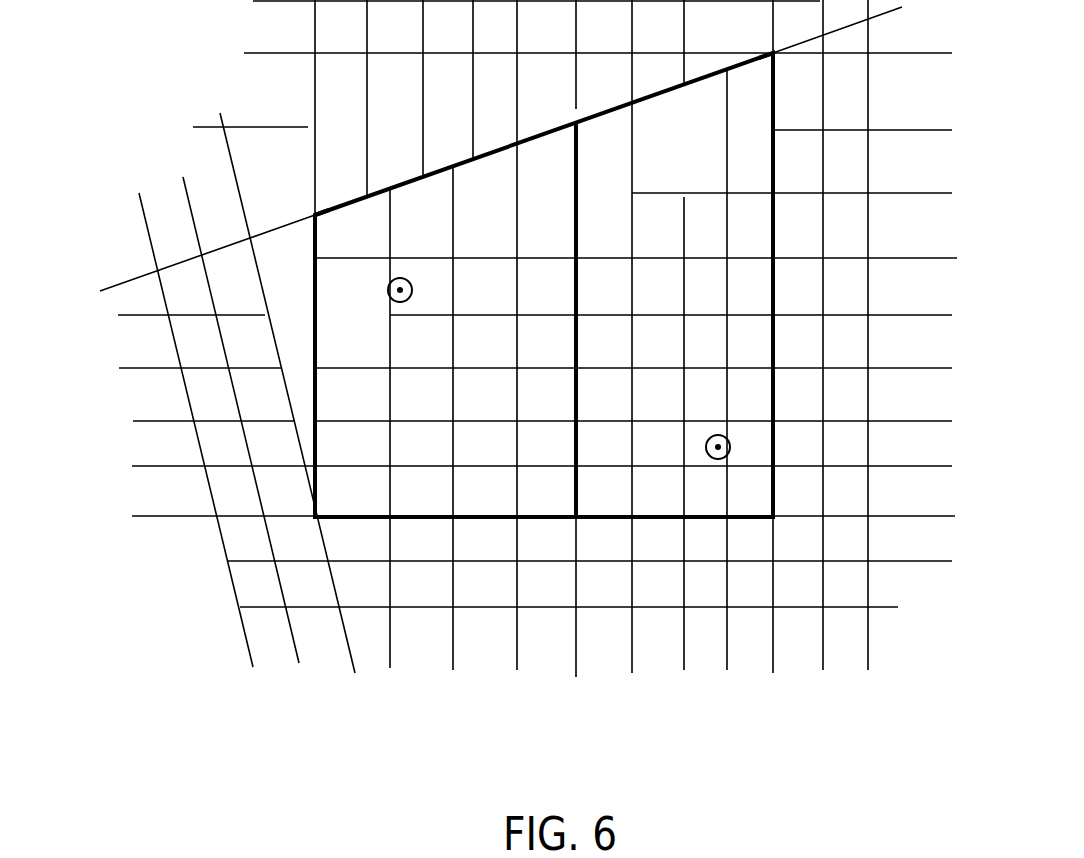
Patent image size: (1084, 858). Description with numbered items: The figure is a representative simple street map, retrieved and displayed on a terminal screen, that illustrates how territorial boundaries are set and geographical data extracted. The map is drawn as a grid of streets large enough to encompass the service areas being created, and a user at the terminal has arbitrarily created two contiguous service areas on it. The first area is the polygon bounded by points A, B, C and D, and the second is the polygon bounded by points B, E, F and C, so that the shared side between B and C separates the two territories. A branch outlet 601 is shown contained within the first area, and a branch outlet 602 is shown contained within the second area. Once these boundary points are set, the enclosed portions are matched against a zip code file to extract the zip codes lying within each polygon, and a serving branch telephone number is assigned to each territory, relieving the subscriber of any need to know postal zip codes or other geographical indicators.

The branch outlet 601 is at (401, 278).
The branch outlet 602 is at (717, 435).
The boundary point A is at (324, 206).
The boundary point B is at (587, 135).
The boundary point C is at (573, 525).
The boundary point D is at (327, 499).
The boundary point E is at (763, 71).
The boundary point F is at (775, 525).